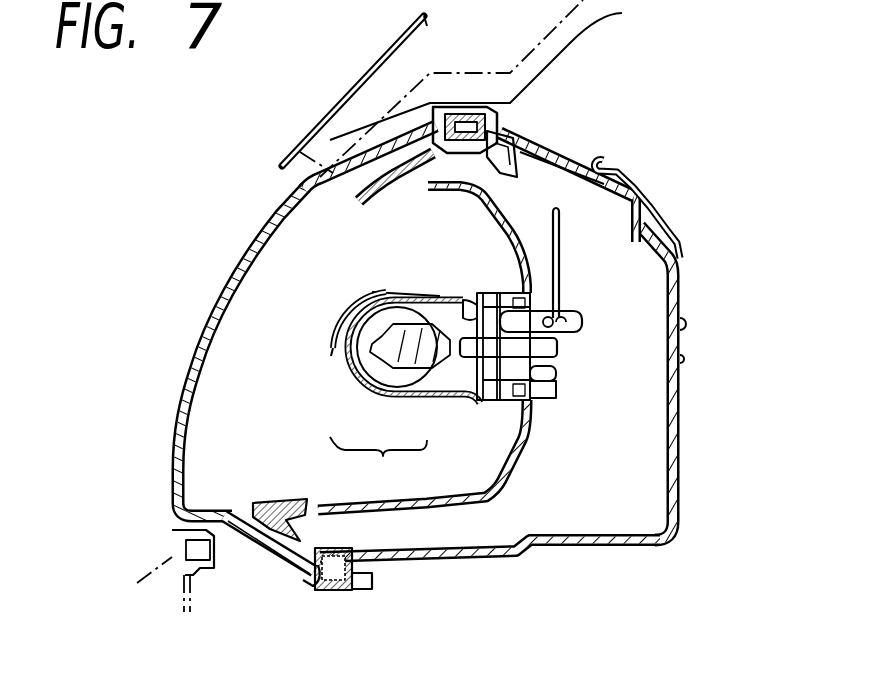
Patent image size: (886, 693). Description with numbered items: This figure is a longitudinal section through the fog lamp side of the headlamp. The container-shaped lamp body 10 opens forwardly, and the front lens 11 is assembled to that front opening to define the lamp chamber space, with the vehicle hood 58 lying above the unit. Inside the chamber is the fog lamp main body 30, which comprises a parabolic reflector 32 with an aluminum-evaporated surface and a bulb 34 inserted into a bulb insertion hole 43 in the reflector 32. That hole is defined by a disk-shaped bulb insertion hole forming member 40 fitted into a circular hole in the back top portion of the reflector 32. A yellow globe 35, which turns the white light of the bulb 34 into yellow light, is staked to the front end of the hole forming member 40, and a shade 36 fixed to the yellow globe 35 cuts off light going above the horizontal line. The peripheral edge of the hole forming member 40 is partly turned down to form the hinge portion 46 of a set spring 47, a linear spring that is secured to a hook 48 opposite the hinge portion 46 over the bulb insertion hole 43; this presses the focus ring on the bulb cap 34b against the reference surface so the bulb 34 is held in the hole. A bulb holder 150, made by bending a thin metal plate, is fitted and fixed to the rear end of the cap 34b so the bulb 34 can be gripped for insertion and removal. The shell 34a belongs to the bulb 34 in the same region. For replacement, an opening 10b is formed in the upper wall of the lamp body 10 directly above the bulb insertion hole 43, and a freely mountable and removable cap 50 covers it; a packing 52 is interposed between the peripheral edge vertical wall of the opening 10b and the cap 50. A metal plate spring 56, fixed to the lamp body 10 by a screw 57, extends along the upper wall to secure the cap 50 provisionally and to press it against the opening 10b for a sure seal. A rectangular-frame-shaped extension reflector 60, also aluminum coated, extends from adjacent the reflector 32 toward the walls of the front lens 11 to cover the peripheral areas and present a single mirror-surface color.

The lamp body 10 is at (683, 433).
The opening for bulb replacement 10b is at (553, 157).
The front lens 11 is at (222, 298).
The fog lamp main body 30 is at (378, 463).
The reflector 32 is at (507, 447).
The bulb 34 is at (378, 351).
The bulb holder sleeve 34a is at (370, 300).
The cap 34b is at (440, 292).
The yellow globe 35 is at (348, 358).
The shade 36 is at (343, 307).
The bulb insertion hole forming member 40 is at (461, 309).
The bulb insertion hole 43 is at (477, 297).
The hinge portion 46 is at (560, 372).
The set spring 47 is at (582, 314).
The hook 48 is at (586, 331).
The cap 50 is at (563, 167).
The packing 52 is at (512, 143).
The plate spring 56 is at (648, 203).
The screw 57 is at (686, 325).
The hood 58 is at (350, 77).
The extension reflector 60 is at (273, 500).
The bulb holder 150 is at (560, 260).